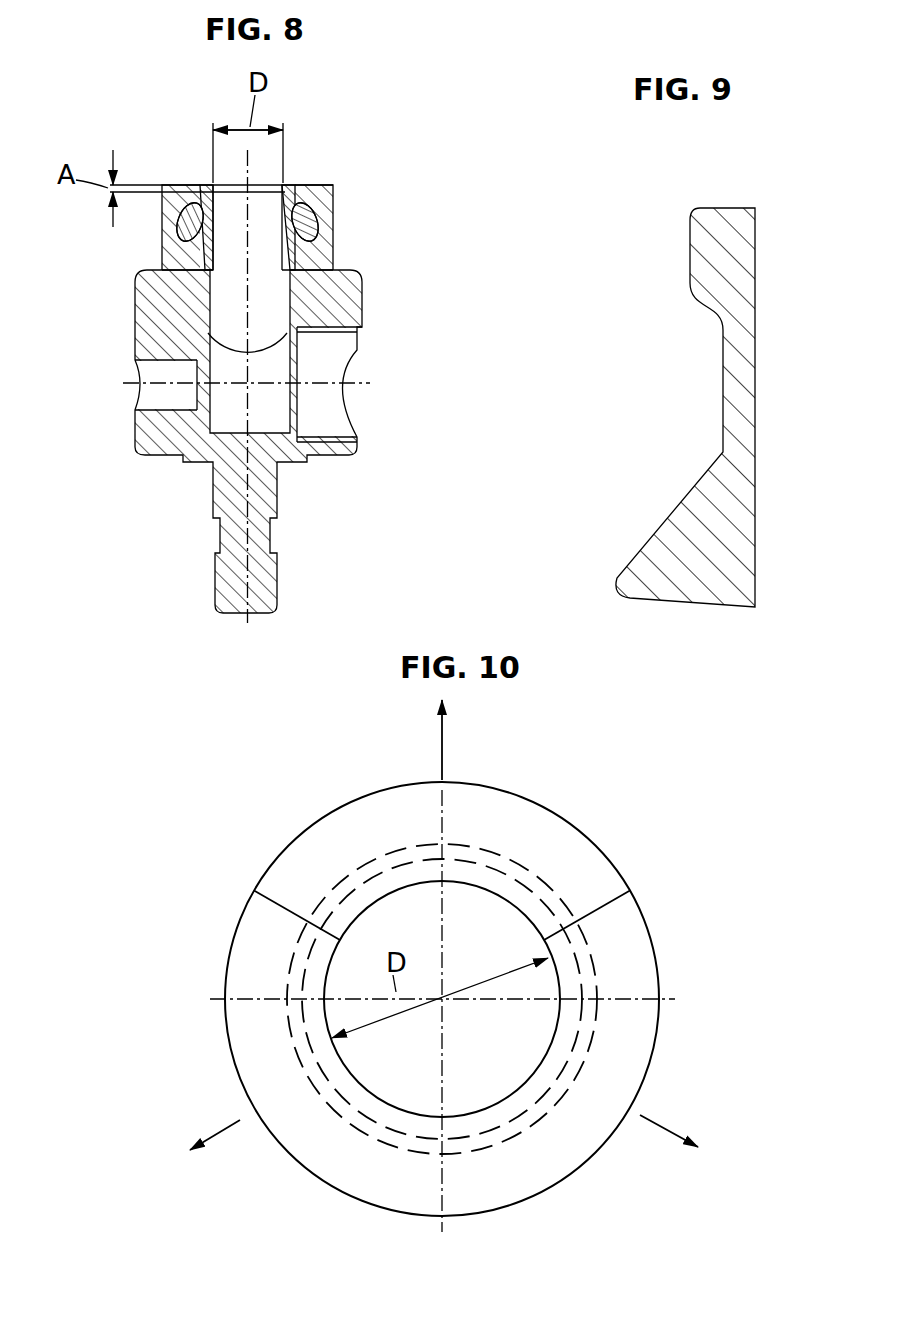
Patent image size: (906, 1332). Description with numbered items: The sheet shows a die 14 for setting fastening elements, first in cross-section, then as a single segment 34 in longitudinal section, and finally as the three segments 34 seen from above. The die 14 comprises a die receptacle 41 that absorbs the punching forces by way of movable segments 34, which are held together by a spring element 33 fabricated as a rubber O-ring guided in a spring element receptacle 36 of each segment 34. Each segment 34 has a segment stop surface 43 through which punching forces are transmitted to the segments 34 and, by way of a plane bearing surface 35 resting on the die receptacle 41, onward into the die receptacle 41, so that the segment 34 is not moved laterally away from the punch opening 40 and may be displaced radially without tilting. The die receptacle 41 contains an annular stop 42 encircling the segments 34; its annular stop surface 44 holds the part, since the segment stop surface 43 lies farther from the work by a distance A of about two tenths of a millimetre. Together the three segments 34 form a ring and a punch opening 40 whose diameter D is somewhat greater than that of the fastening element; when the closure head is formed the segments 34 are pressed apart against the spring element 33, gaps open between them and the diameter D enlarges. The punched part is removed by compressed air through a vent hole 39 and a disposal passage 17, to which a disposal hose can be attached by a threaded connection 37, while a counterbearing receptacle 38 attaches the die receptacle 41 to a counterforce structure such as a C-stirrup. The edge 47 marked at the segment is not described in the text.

In FIG. 8, the die 14 is at (128, 524).
In FIG. 10, the die 14 is at (694, 1012).
In FIG. 8, the disposal passage 17 is at (333, 407).
In FIG. 8, the spring element 33 is at (333, 193).
In FIG. 10, the spring element 33 is at (550, 893).
In FIG. 8, the movable segment 34 is at (208, 185).
In FIG. 9, the movable segment 34 is at (642, 328).
In FIG. 10, the movable segment 34 is at (537, 827).
In FIG. 8, the bearing surface 35 is at (313, 262).
In FIG. 9, the bearing surface 35 is at (727, 608).
In FIG. 9, the spring element receptacle 36 is at (720, 395).
In FIG. 8, the threaded connection 37 is at (350, 338).
In FIG. 8, the counterbearing receptacle 38 is at (267, 586).
In FIG. 8, the vent hole 39 is at (150, 398).
In FIG. 8, the punch opening 40 is at (245, 239).
In FIG. 10, the punch opening 40 is at (497, 1071).
In FIG. 8, the die receptacle 41 is at (153, 313).
In FIG. 8, the annular stop 42 is at (175, 221).
In FIG. 8, the segment stop surface 43 is at (198, 181).
In FIG. 9, the segment stop surface 43 is at (738, 205).
In FIG. 8, the annular stop surface 44 is at (175, 185).
In FIG. 8, the edge 47 is at (296, 272).